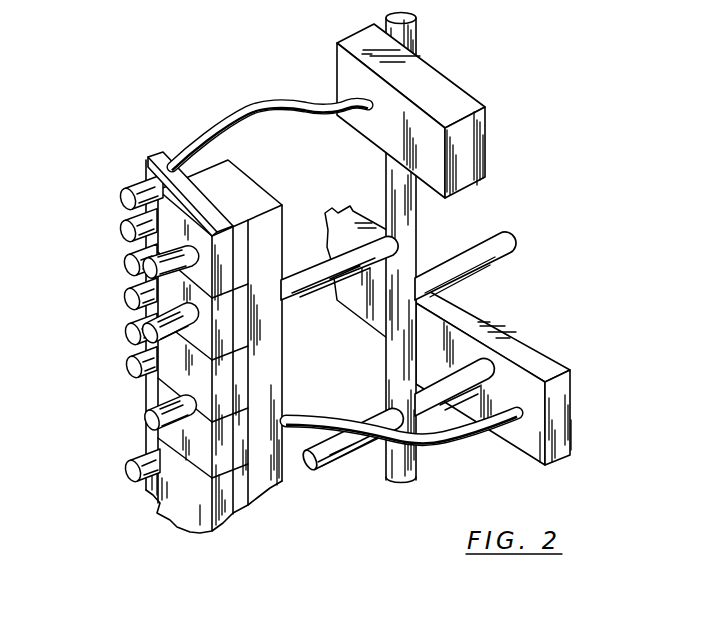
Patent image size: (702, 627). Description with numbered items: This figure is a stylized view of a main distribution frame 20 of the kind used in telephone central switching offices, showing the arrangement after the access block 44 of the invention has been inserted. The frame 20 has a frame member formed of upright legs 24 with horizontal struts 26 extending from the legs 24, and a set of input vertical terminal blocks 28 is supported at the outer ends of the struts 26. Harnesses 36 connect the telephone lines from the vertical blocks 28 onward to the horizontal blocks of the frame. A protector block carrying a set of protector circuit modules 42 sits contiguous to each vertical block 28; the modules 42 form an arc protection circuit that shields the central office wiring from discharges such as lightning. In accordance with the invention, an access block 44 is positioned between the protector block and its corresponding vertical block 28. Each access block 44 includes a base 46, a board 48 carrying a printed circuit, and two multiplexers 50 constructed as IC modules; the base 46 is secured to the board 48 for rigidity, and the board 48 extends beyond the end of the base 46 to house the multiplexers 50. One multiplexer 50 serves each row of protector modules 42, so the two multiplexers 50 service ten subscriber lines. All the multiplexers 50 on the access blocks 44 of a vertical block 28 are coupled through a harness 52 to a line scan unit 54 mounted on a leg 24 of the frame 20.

The main distribution frame 20 is at (534, 320).
The upright legs 24 is at (417, 462).
The struts 26 is at (497, 233).
The input vertical terminal blocks 28 is at (262, 489).
The harnesses 36 is at (299, 413).
The protector circuit modules 42 is at (146, 414).
The access block 44 is at (239, 252).
The base 46 is at (192, 206).
The board 48 is at (155, 155).
The multiplexers 50 is at (121, 231).
The harness 52 is at (243, 117).
The line scan unit 54 is at (472, 147).